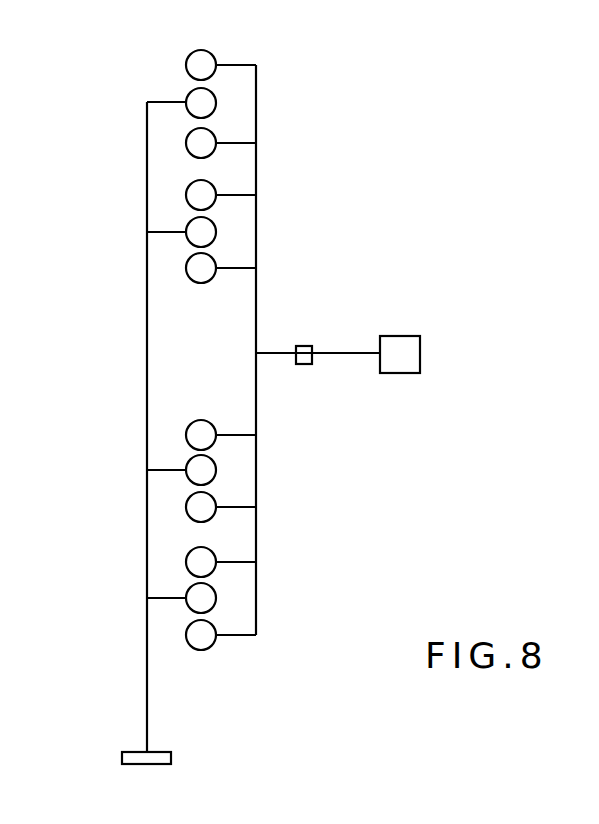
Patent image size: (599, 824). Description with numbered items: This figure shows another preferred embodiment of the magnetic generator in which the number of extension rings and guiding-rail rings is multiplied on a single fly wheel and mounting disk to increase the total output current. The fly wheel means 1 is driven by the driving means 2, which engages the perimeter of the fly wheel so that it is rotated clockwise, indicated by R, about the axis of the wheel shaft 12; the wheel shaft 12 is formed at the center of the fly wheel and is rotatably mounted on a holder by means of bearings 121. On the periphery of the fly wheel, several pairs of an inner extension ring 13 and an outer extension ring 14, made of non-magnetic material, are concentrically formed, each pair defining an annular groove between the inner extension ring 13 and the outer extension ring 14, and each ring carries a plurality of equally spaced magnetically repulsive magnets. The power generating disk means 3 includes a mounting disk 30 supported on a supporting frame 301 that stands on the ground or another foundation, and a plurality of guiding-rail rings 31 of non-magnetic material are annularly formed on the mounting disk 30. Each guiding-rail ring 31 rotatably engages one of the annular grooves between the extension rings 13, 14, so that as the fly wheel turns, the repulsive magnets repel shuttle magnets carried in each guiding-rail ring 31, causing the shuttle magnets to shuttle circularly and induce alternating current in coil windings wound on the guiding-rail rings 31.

The fly wheel means 1 is at (260, 167).
The driving means 2 is at (422, 361).
The power generating disk means 3 is at (100, 433).
The wheel shaft 12 is at (277, 353).
The inner extension ring 13 is at (213, 131).
The outer extension ring 14 is at (187, 56).
The mounting disk 30 is at (146, 388).
The guiding-rail ring 31 is at (188, 98).
The bearings 121 is at (312, 365).
The supporting frame 301 is at (140, 752).
The clockwise rotation R is at (348, 372).